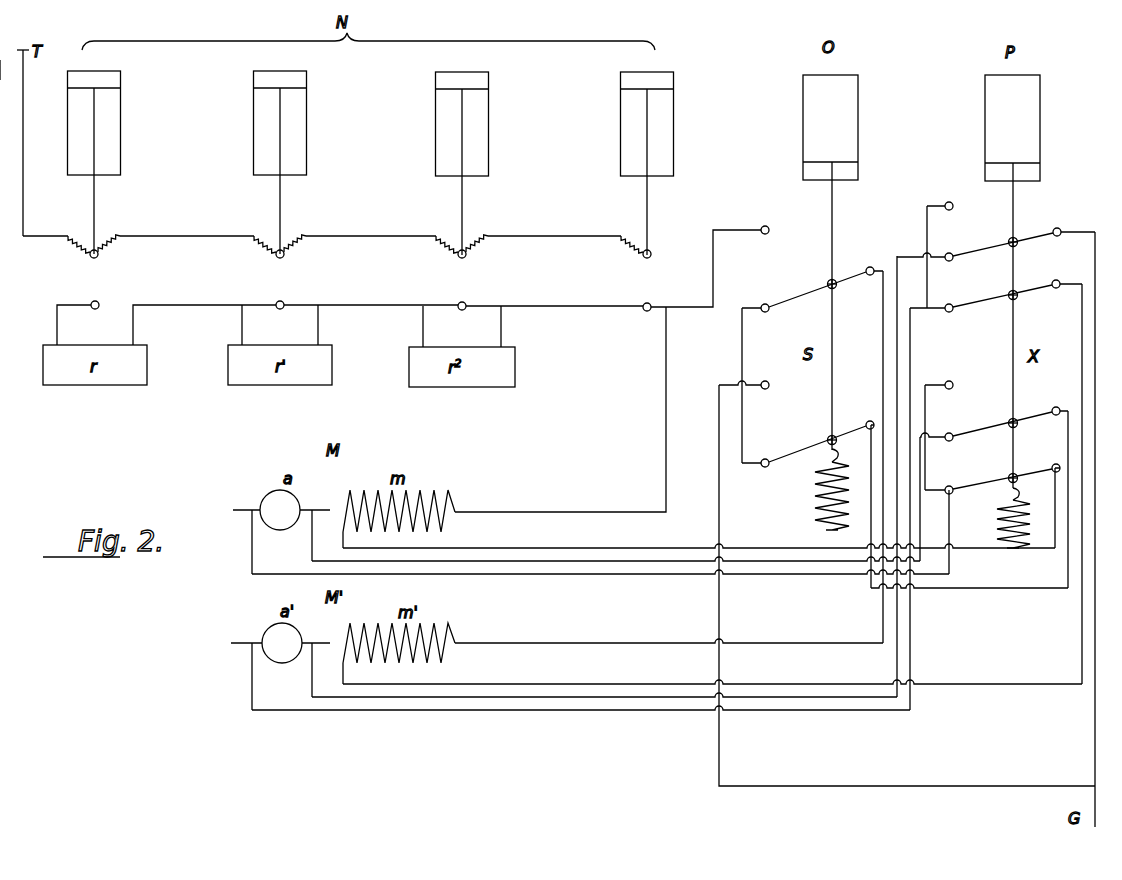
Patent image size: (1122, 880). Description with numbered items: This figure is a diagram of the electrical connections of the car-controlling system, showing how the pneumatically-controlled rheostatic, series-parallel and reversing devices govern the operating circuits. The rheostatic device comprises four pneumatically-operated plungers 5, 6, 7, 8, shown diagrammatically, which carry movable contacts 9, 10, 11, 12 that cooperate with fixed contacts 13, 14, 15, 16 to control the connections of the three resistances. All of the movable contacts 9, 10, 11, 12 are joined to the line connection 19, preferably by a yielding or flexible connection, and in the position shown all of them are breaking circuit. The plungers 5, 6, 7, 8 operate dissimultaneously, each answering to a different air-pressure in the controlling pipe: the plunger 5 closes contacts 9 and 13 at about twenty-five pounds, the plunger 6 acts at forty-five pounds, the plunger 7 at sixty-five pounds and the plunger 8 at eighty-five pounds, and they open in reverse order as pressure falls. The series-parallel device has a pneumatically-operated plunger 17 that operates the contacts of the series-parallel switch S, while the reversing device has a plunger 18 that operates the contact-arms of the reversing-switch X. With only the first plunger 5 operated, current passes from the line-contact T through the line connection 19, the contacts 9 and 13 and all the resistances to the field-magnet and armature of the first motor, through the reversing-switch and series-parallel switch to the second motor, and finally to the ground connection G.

The pneumatically-operated plunger 5 is at (94, 162).
The pneumatically-operated plunger 6 is at (280, 162).
The pneumatically-operated plunger 7 is at (462, 163).
The pneumatically-operated plunger 8 is at (647, 163).
The contact 9 is at (94, 255).
The contact 10 is at (281, 255).
The contact 11 is at (464, 255).
The contact 12 is at (631, 255).
The fixed contact 13 is at (106, 297).
The fixed contact 14 is at (291, 296).
The fixed contact 15 is at (473, 297).
The fixed contact 16 is at (650, 297).
The pneumatically-operated plunger 17 is at (846, 306).
The pneumatically-operated plunger 18 is at (1025, 325).
The line connection 19 is at (322, 221).